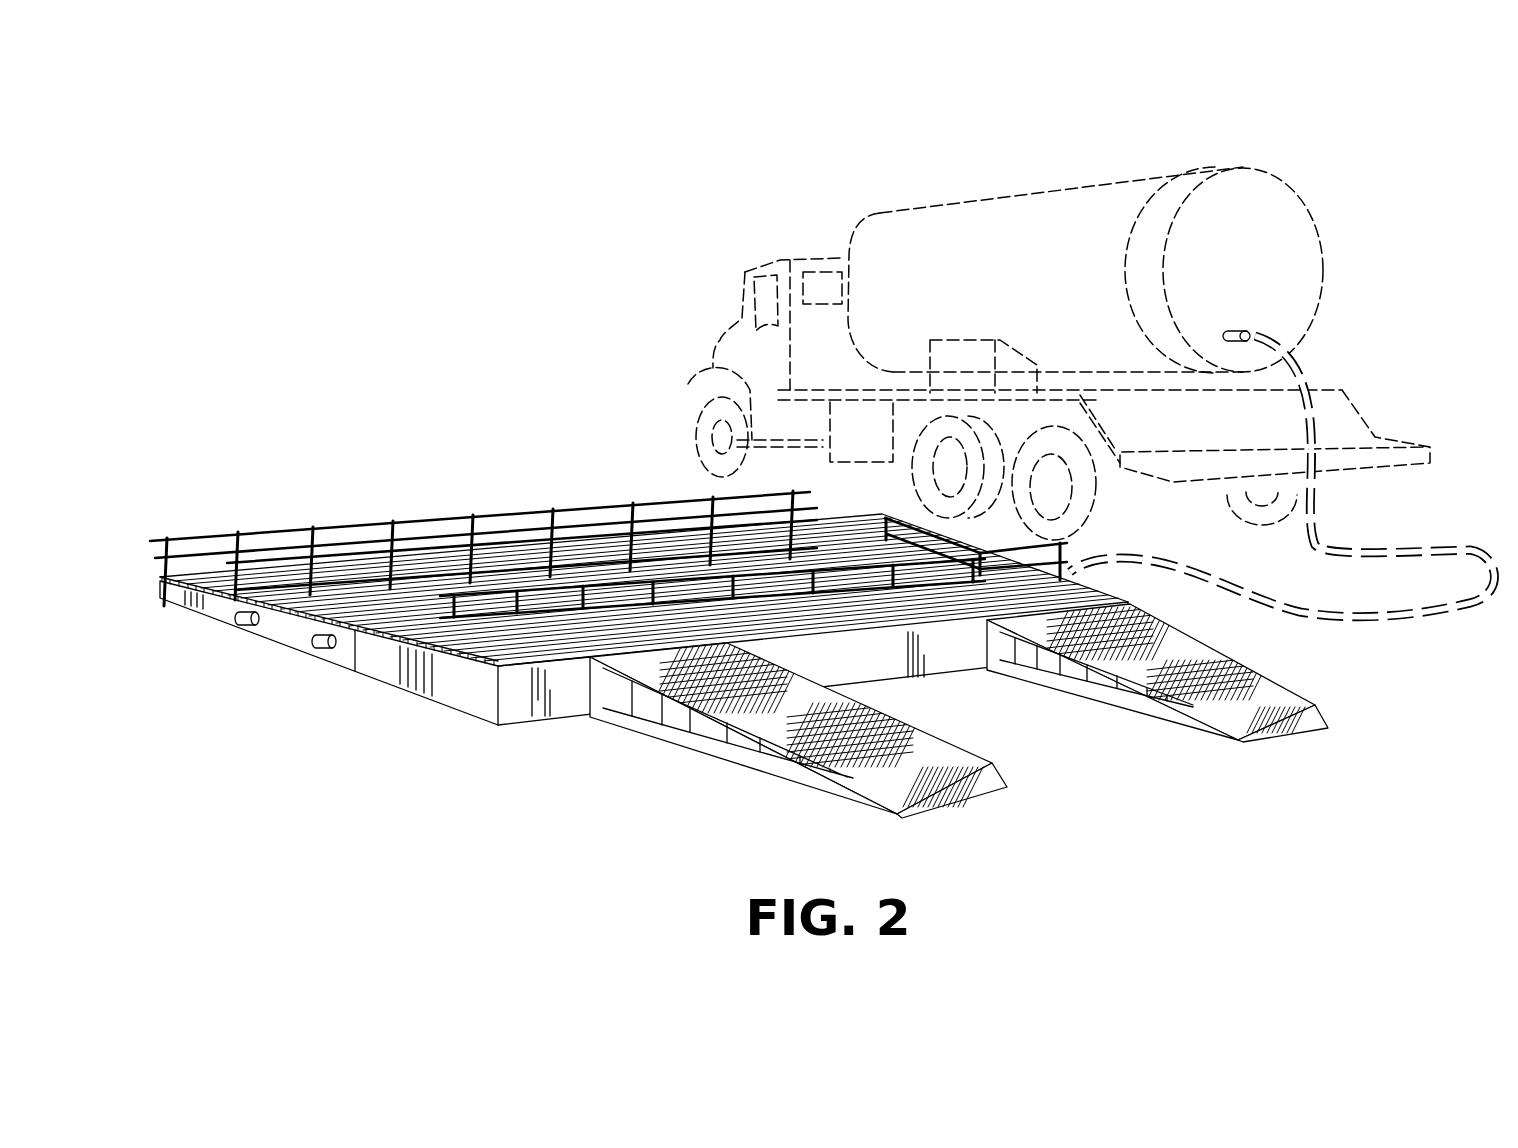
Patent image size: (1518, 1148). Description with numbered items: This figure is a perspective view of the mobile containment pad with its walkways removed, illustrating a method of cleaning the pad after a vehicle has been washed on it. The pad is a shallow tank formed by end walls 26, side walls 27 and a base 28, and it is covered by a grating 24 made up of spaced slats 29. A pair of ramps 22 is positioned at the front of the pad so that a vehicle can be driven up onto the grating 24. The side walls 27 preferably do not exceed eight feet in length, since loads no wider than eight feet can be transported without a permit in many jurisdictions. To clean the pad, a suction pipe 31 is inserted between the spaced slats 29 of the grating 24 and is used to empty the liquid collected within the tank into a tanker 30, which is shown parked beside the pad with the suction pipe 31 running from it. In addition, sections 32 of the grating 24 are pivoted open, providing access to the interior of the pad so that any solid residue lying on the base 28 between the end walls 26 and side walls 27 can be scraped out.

The ramps 22 is at (930, 768).
The grating 24 is at (473, 640).
The end walls 26 is at (520, 703).
The side walls 27 is at (380, 667).
The base 28 is at (928, 648).
The spaced slats 29 is at (565, 650).
The tanker 30 is at (1297, 250).
The suction pipe 31 is at (1397, 545).
The sections of grating 32 is at (538, 512).